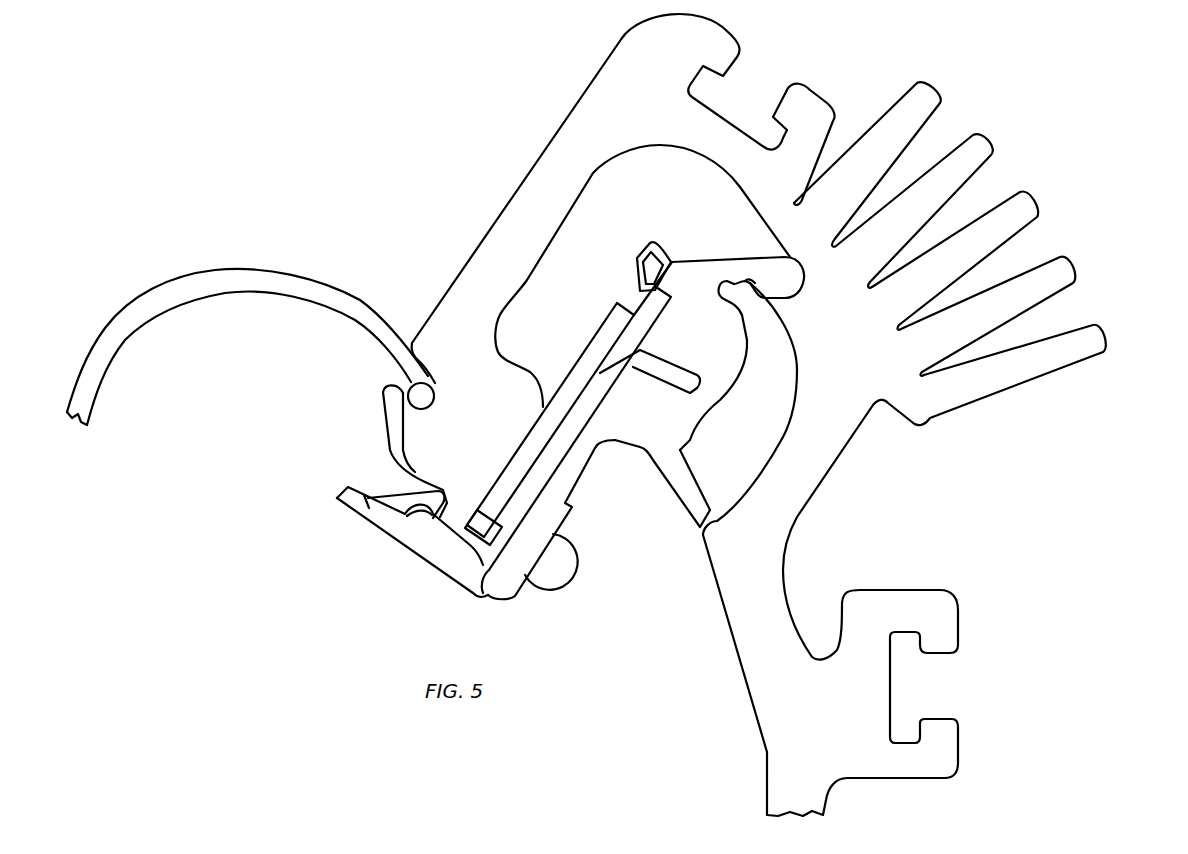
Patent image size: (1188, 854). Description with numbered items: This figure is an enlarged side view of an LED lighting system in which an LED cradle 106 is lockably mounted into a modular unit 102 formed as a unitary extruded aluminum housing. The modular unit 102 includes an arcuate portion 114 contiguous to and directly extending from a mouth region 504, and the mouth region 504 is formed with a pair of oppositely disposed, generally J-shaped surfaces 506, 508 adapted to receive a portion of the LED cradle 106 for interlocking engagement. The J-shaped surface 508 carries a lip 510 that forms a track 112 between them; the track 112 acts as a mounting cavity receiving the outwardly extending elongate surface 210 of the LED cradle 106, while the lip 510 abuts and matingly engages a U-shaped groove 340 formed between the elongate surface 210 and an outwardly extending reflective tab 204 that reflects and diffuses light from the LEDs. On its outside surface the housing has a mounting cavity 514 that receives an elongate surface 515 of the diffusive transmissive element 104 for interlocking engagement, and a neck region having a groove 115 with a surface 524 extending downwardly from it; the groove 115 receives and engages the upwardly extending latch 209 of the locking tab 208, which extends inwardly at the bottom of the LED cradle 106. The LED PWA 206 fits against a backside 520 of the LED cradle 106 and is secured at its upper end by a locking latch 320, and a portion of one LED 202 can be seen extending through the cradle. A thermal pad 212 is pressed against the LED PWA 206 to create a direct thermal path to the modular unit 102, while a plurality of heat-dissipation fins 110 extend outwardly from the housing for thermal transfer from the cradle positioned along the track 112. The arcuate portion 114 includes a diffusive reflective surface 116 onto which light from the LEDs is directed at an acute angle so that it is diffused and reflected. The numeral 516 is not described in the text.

The modular unit 102 is at (492, 160).
The diffusive transmissive element 104 is at (165, 292).
The LED cradle 106 is at (461, 457).
The heat-dissipation fins 110 is at (982, 135).
The track 112 is at (780, 298).
The arcuate portion 114 is at (737, 645).
The diffusive reflective surface 116 is at (742, 778).
The groove 115 is at (408, 545).
The LED 202 is at (577, 572).
The reflective tab 204 is at (686, 505).
The LED PWA 206 is at (638, 300).
The locking tab 208 is at (335, 520).
The upwardly extending latch 209 is at (395, 490).
The elongate surface 210 is at (800, 280).
The thermal pad 212 is at (572, 362).
The locking latch 320 is at (637, 253).
The U-shaped groove 340 is at (722, 298).
The mouth region 504 is at (490, 230).
The J-shaped surface 506 is at (520, 283).
The J-shaped surface 508 is at (768, 470).
The lip 510 is at (748, 262).
The mounting cavity 514 is at (420, 335).
The elongate surface 515 is at (430, 398).
The strip 516 is at (390, 455).
The backside 520 is at (486, 595).
The surface 524 is at (445, 568).